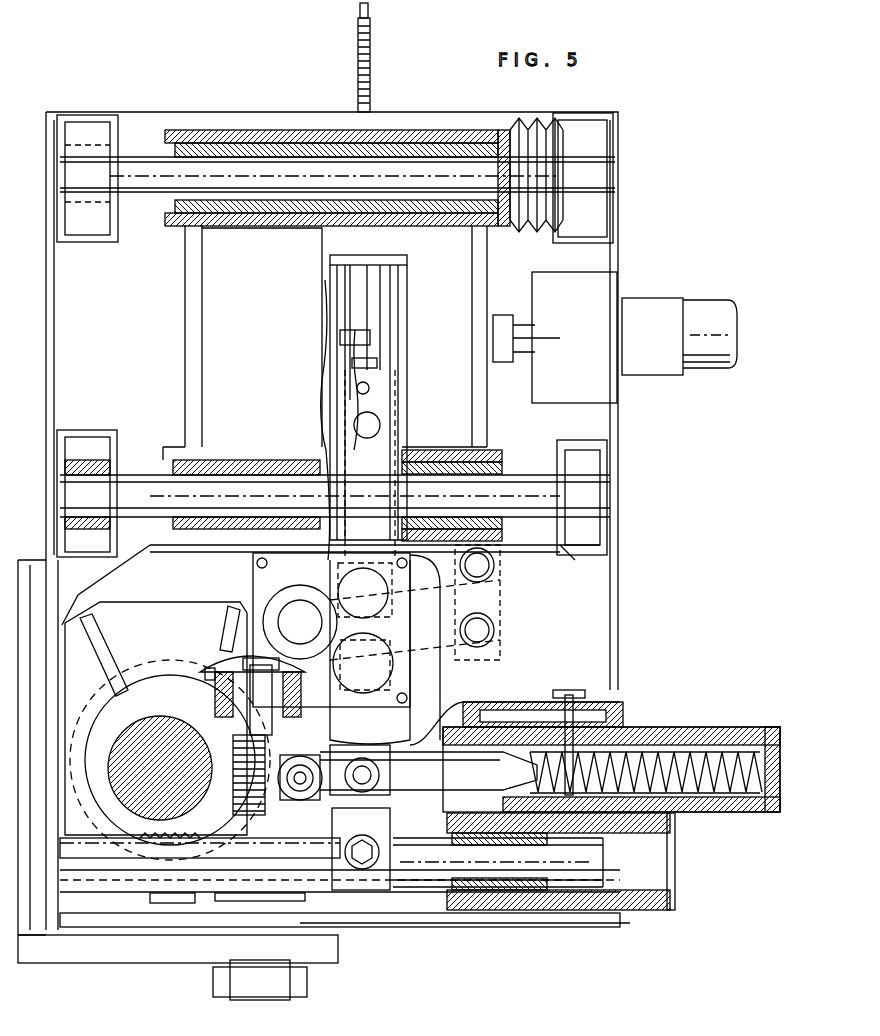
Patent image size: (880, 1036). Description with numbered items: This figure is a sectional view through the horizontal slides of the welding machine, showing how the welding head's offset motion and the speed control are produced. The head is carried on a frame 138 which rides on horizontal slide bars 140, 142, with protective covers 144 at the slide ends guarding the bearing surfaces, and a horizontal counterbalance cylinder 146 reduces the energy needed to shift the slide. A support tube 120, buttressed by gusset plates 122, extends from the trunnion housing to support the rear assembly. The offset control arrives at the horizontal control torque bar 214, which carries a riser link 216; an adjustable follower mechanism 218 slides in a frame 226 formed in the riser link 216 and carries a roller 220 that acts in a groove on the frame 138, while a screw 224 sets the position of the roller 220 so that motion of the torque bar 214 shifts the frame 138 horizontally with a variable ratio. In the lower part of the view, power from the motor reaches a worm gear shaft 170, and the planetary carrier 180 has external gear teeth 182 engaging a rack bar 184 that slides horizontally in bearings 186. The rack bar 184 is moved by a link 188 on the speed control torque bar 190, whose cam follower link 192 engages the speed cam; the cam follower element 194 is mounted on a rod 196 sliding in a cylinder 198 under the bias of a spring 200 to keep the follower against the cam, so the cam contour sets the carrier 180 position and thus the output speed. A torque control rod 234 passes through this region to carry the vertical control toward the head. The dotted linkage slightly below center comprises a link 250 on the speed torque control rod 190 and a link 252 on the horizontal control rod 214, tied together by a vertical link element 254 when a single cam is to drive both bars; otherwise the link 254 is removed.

The support tube 120 is at (110, 712).
The gusset plates 122 is at (112, 660).
The frame 138 is at (224, 130).
The horizontal slide bar 140 is at (142, 470).
The horizontal slide bar 142 is at (135, 160).
The protective covers 144 is at (540, 232).
The horizontal counterbalance cylinder 146 is at (665, 310).
The worm gear shaft 170 is at (270, 897).
The carrier 180 is at (128, 820).
The external gear teeth 182 is at (145, 845).
The rack bar 184 is at (200, 851).
The bearings 186 is at (500, 885).
The link 188 is at (385, 826).
The speed control torque bar 190 is at (400, 660).
The cam follower link 192 is at (330, 731).
The cam follower element 194 is at (300, 800).
The rod 196 is at (428, 770).
The cylinder 198 is at (662, 730).
The spring 200 is at (728, 760).
The horizontal control torque bar 214 is at (355, 583).
The riser link 216 is at (355, 480).
The adjustable follower mechanism 218 is at (369, 388).
The roller 220 is at (380, 425).
The screw 224 is at (357, 35).
The frame 226 is at (385, 308).
The torque control rod 234 is at (297, 607).
The link 250 is at (480, 660).
The link 252 is at (495, 568).
The vertical link element 254 is at (500, 612).